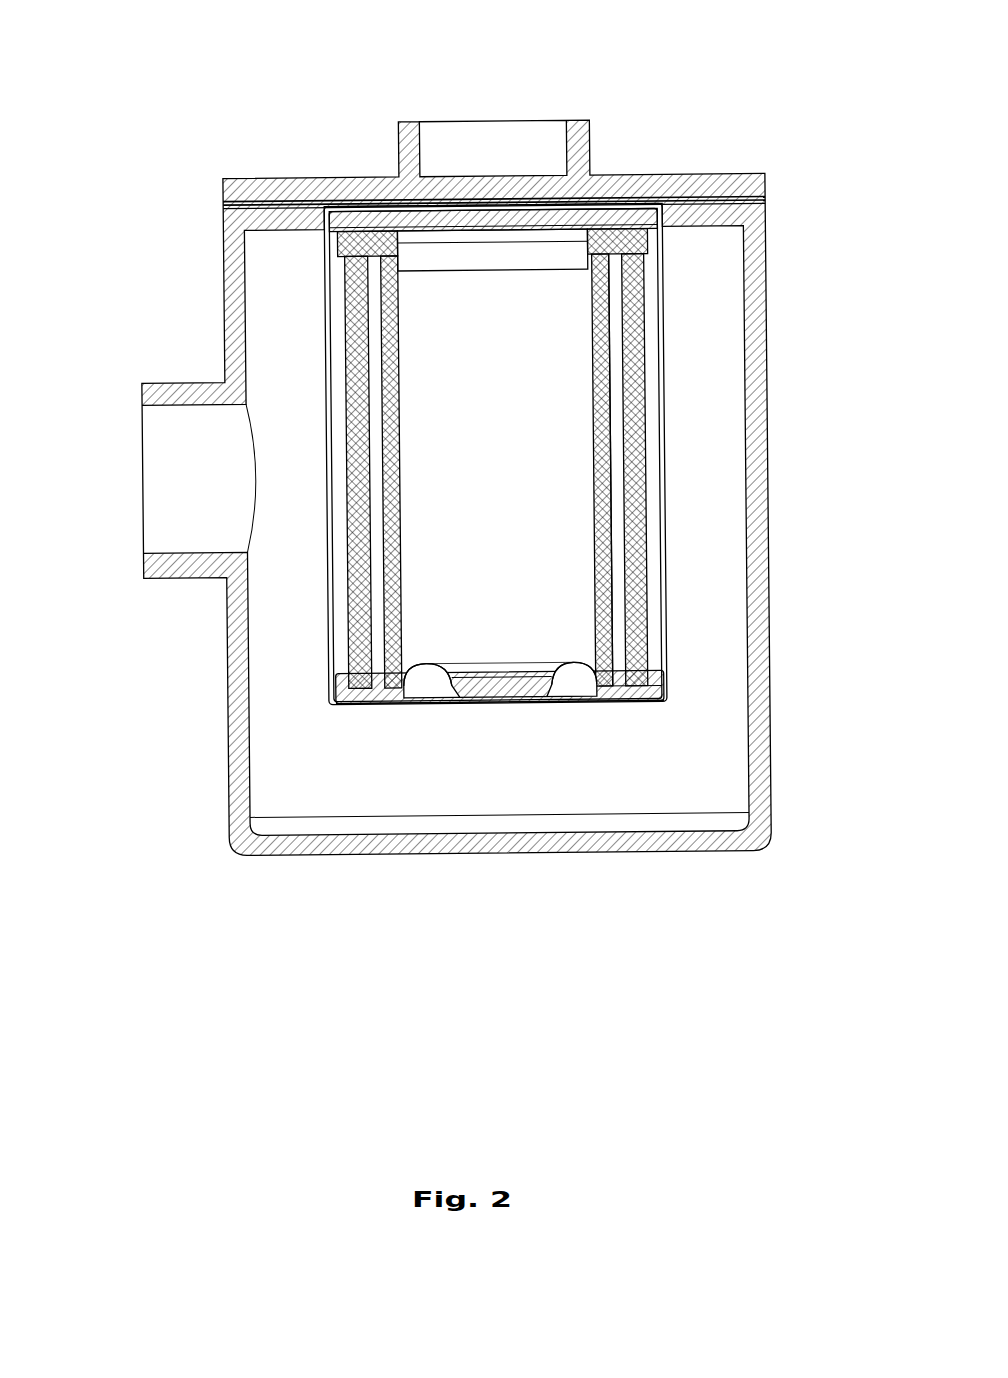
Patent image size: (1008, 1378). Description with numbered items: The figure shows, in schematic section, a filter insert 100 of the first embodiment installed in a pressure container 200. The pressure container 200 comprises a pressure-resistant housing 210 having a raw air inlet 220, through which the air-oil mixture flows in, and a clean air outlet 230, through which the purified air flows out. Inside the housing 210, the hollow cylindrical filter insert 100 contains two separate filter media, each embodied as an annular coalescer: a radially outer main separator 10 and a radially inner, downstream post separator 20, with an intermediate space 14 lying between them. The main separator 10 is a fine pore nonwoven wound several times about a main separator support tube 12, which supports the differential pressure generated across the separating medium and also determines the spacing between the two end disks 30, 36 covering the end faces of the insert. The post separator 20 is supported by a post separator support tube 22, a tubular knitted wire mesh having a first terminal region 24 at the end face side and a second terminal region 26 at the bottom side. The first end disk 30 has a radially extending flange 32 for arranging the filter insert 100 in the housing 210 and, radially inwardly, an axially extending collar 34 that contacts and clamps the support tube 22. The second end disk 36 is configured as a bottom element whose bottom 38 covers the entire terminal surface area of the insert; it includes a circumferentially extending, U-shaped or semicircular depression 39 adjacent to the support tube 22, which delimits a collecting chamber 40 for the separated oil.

The pressure container 200 is at (188, 69).
The pressure-resistant housing 210 is at (596, 854).
The raw air inlet 220 is at (143, 474).
The clean air outlet 230 is at (501, 120).
The flange of the first end disk 32 is at (758, 203).
The filter insert 100 is at (301, 326).
The first end disk 30 is at (472, 215).
The collar of the first end disk 34 is at (500, 265).
The main separator 10 is at (355, 420).
The main separator support tube 12 is at (370, 522).
The post separator 20 is at (597, 340).
The post separator support tube 22 is at (598, 455).
The first terminal region of the post separator support tube 24 is at (597, 262).
The second end disk 36 is at (425, 731).
The bottom of the second end disk 38 is at (522, 703).
The collecting chamber 40 is at (500, 691).
The second terminal region of the post separator support tube 26 is at (400, 682).
The axial depression of the second end disk 39 is at (570, 663).
The intermediate space 14 is at (617, 660).